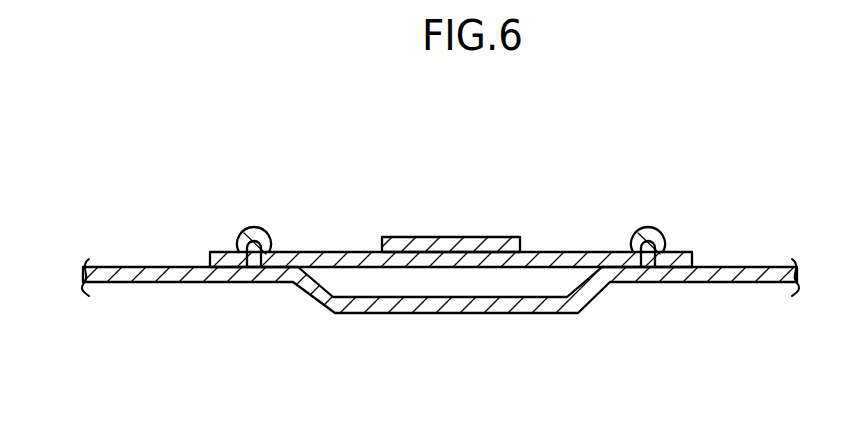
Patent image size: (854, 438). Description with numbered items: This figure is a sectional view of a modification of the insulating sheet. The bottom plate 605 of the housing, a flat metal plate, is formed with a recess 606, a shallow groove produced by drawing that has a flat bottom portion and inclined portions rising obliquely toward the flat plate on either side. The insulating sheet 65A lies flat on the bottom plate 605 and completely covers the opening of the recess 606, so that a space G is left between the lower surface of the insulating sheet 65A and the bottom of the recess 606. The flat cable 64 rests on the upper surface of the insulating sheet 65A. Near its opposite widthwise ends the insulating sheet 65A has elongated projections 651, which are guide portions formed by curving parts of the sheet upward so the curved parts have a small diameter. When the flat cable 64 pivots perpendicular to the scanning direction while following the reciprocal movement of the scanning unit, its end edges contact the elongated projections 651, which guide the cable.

The bottom plate 605 is at (160, 274).
The insulating sheet 65A is at (571, 250).
The elongated projections 651 is at (256, 227).
The flat cable 64 is at (448, 237).
The space G is at (427, 281).
The recess 606 is at (520, 314).